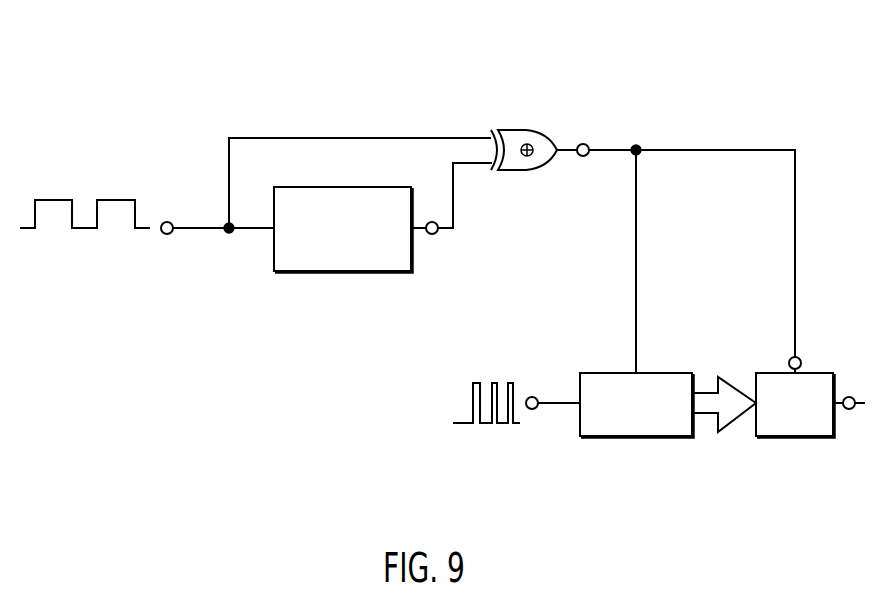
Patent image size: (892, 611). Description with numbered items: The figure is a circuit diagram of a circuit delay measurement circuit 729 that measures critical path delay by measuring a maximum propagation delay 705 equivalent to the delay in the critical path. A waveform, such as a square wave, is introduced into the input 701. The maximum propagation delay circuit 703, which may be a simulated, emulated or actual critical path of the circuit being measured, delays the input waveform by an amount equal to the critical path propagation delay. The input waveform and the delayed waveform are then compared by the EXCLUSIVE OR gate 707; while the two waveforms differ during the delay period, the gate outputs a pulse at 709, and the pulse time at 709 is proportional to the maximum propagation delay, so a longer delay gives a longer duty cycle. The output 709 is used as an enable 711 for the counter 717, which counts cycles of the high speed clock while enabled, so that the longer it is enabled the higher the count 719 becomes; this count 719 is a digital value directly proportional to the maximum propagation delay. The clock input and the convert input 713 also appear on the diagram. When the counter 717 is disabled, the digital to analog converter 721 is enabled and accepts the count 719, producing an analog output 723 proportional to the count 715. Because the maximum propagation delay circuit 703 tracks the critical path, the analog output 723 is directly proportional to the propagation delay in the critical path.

The input 701 is at (167, 235).
The maximum propagation delay circuit 703 is at (345, 273).
The maximum propagation delay 705 is at (433, 235).
The EXCLUSIVE OR gate 707 is at (515, 130).
The pulse output 709 is at (585, 143).
The enable 711 is at (636, 367).
The convert signal 713 is at (822, 346).
The count 715 is at (462, 394).
The counter 717 is at (636, 438).
The count 719 is at (727, 412).
The digital to analog converter 721 is at (795, 438).
The analog output 723 is at (849, 410).
The delay measurement circuit 729 is at (355, 118).